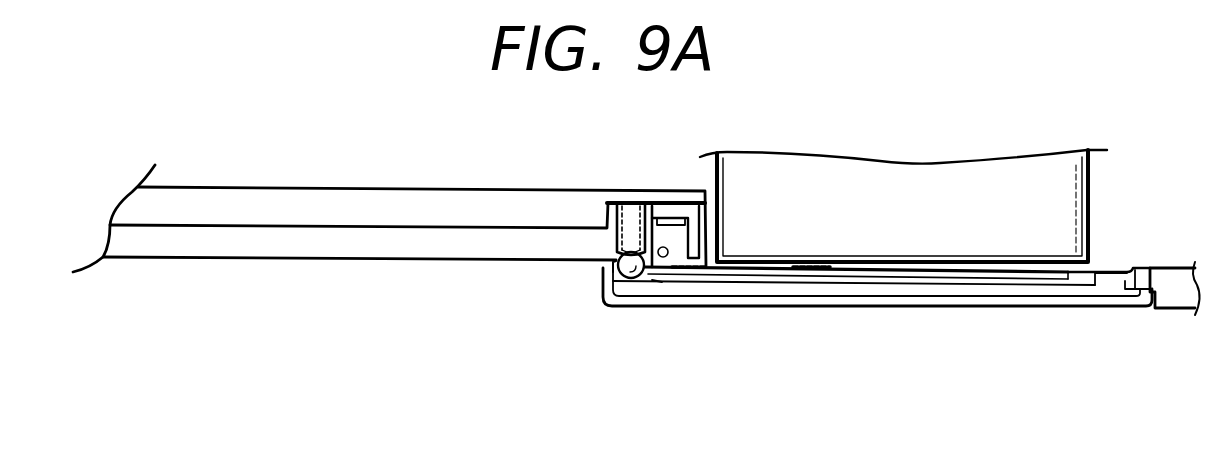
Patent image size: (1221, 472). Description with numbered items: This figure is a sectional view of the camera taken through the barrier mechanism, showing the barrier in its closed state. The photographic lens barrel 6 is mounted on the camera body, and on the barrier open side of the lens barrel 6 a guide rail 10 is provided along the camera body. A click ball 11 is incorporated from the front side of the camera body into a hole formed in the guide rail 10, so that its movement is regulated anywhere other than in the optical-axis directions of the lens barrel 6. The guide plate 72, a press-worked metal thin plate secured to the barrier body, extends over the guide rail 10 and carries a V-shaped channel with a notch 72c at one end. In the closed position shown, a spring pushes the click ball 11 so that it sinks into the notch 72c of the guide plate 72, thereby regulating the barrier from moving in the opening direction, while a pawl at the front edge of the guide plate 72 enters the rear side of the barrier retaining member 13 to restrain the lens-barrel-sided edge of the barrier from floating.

The photographic lens barrel 6 is at (1083, 200).
The guide rail 10 is at (428, 250).
The click ball 11 is at (607, 268).
The barrier retaining member 13 is at (1177, 297).
The guide plate 72 is at (762, 272).
The notch 72c is at (660, 282).